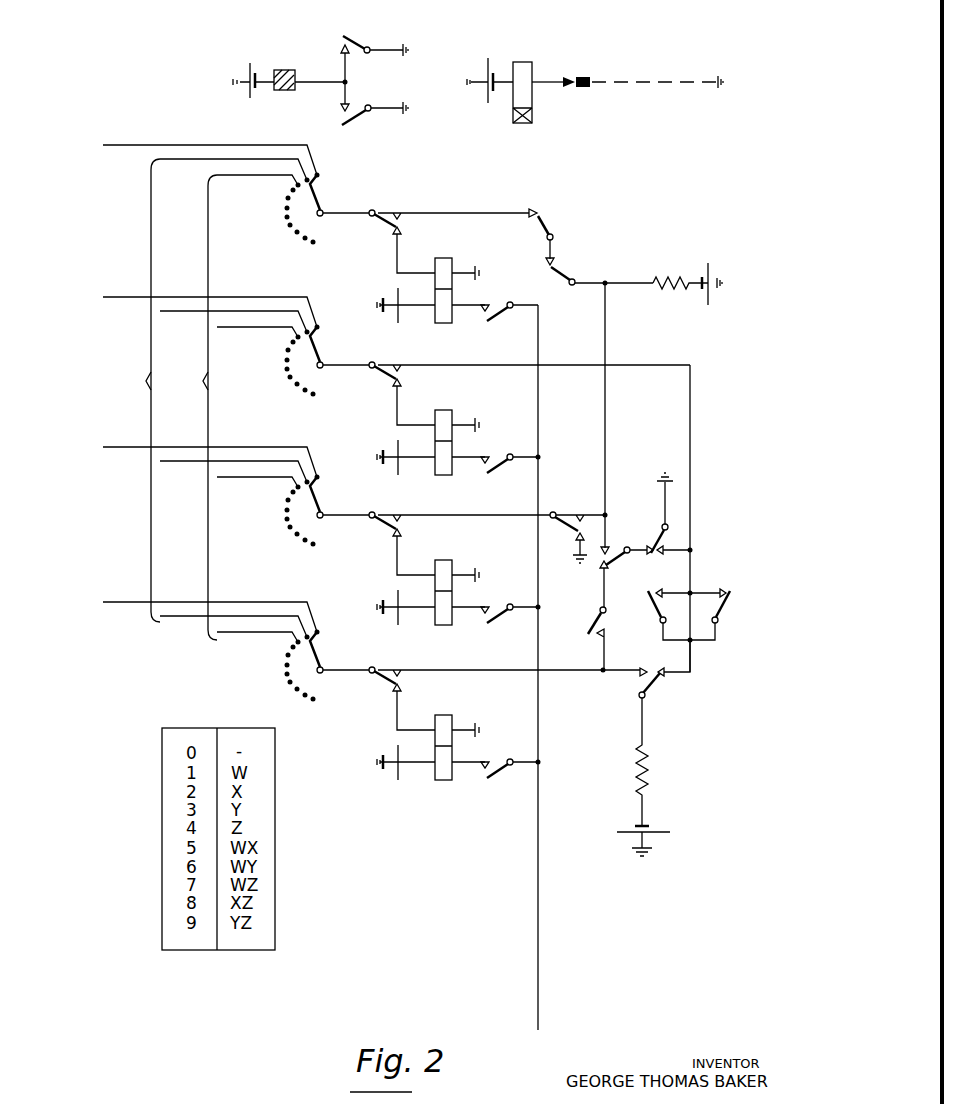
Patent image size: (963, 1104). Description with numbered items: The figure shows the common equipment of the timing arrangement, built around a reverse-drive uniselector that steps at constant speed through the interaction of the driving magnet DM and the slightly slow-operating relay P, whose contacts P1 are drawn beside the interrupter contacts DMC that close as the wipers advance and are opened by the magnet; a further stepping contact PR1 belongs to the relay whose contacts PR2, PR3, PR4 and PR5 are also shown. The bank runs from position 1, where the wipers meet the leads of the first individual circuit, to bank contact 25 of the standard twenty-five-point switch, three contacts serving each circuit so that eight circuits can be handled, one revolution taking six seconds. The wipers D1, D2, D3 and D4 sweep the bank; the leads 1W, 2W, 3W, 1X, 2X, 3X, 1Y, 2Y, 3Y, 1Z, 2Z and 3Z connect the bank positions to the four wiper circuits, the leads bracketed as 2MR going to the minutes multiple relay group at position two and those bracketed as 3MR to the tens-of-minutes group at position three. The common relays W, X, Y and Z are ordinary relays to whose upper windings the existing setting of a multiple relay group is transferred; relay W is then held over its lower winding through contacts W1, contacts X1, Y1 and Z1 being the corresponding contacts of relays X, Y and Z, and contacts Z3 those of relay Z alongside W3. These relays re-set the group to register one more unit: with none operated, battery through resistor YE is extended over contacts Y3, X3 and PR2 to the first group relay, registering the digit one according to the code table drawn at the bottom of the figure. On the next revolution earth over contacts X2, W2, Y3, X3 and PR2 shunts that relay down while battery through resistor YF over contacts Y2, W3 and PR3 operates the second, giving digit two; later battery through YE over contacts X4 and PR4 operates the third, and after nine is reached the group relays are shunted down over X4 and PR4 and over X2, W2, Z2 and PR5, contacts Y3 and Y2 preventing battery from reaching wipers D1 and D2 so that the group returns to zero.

The driving magnet DM is at (299, 56).
The contact P1 is at (374, 50).
The contacts PR1 is at (374, 112).
The relay P is at (529, 41).
The interrupter contacts DMC is at (627, 73).
The bracketed leads 2MR is at (131, 390).
The bracketed leads 3MR is at (190, 407).
The input lead 1W is at (209, 150).
The input lead 2W is at (181, 167).
The input lead 3W is at (237, 181).
The position 1 is at (322, 397).
The bank contact 25 is at (313, 449).
The wiper D1 is at (331, 199).
The contacts PR2 is at (449, 233).
The relay W is at (449, 239).
The contacts W1 is at (509, 318).
The contacts X3 is at (548, 236).
The contacts Y3 is at (591, 280).
The resistor YE is at (687, 282).
The input lead 1X is at (209, 302).
The input lead 2X is at (181, 319).
The input lead 3X is at (235, 333).
The wiper D2 is at (331, 351).
The contacts PR3 is at (529, 508).
The relay X is at (449, 391).
The contact X1 is at (511, 466).
The input lead 1Y is at (209, 452).
The input lead 2Y is at (181, 469).
The input lead 3Y is at (235, 483).
The wiper D3 is at (331, 501).
The contacts PR4 is at (459, 535).
The relay Y is at (449, 541).
The contact Y1 is at (511, 620).
The contacts X4 is at (579, 529).
The contacts X2 is at (662, 513).
The contacts W2 is at (626, 565).
The contacts Z2 is at (585, 619).
The contacts W3 is at (657, 614).
The contact Z3 is at (709, 616).
The contacts Y2 is at (664, 669).
The resistor YF is at (644, 777).
The input lead 1Z is at (209, 607).
The input lead 2Z is at (176, 619).
The input lead 3Z is at (235, 636).
The wiper D4 is at (331, 656).
The contacts PR5 is at (504, 690).
The relay Z is at (449, 696).
The contact Z1 is at (511, 777).